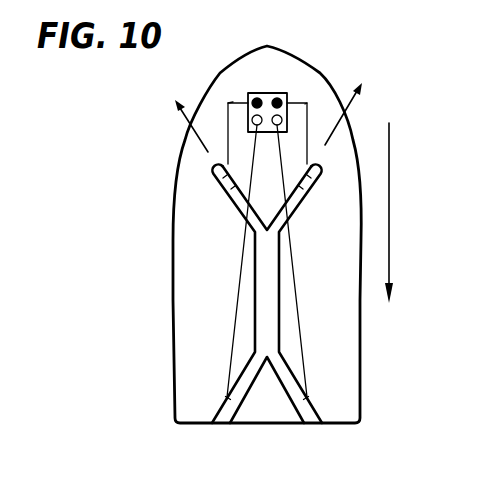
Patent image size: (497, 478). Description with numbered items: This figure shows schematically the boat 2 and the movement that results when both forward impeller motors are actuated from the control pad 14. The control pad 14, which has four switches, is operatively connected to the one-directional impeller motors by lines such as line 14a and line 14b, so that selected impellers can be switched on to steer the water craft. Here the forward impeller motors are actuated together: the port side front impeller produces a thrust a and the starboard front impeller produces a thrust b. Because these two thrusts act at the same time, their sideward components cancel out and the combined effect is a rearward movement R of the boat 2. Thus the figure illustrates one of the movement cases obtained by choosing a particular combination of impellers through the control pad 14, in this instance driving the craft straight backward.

The boat 2 is at (171, 220).
The control pad 14 is at (276, 93).
The line 14a is at (233, 102).
The line 14b is at (305, 104).
The thrust a is at (184, 113).
The thrust b is at (351, 106).
The rearward movement R is at (392, 230).